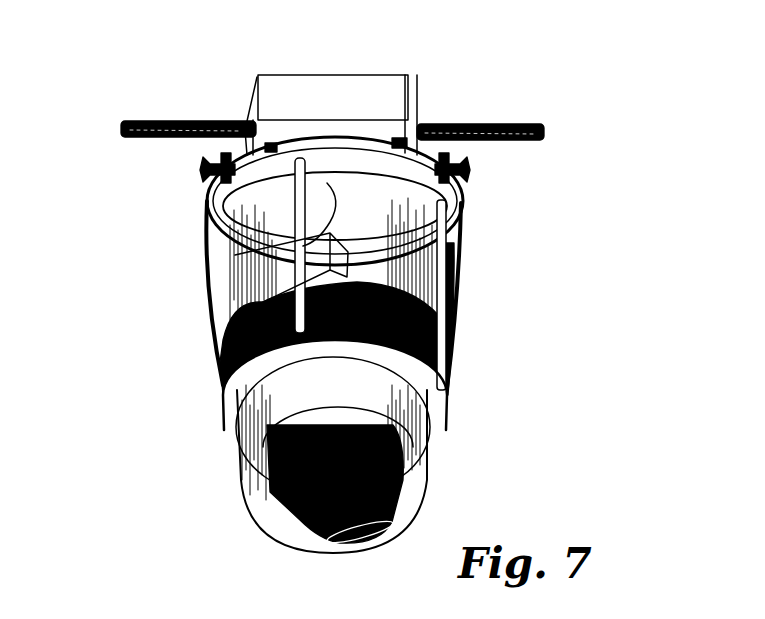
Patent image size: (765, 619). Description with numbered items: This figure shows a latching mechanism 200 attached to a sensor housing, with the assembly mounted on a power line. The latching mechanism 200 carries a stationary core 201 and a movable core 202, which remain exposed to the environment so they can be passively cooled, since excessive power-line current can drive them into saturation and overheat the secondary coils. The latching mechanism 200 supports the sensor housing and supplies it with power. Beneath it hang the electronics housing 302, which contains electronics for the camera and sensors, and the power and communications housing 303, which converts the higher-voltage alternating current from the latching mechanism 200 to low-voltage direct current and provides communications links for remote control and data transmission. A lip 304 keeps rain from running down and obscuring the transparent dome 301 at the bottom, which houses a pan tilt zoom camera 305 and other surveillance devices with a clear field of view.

The latching mechanism 200 is at (420, 112).
The stationary core 201 is at (300, 77).
The movable core 202 is at (280, 133).
The dome 301 is at (420, 456).
The electronics housing 302 is at (455, 318).
The power and communications housing 303 is at (295, 246).
The lip 304 is at (230, 397).
The pan tilt zoom camera 305 is at (297, 527).